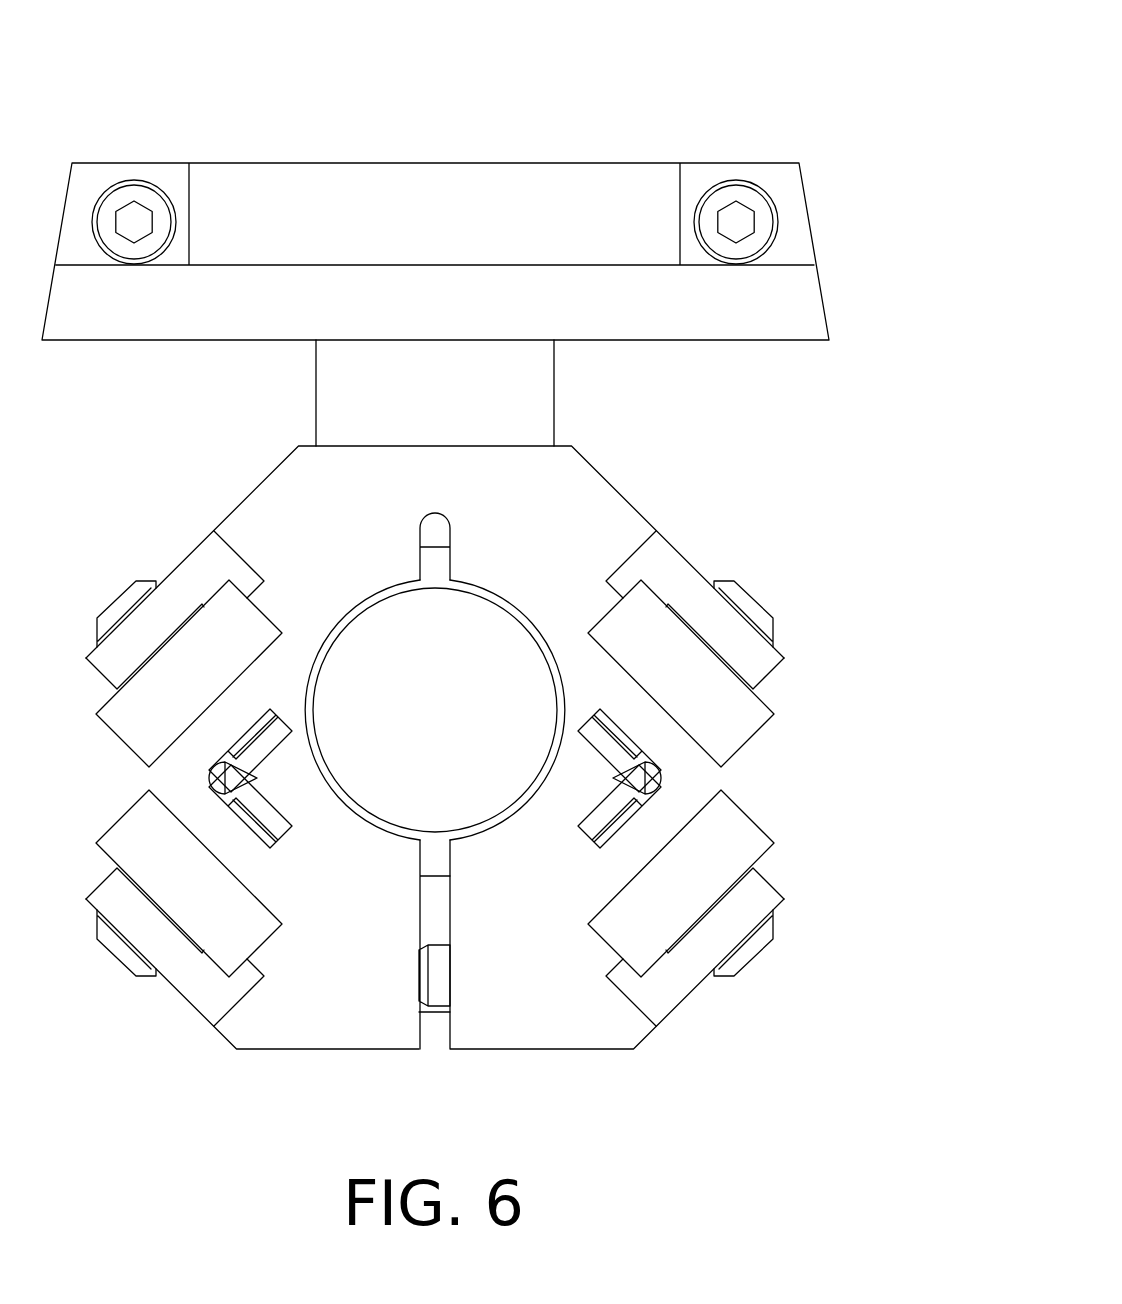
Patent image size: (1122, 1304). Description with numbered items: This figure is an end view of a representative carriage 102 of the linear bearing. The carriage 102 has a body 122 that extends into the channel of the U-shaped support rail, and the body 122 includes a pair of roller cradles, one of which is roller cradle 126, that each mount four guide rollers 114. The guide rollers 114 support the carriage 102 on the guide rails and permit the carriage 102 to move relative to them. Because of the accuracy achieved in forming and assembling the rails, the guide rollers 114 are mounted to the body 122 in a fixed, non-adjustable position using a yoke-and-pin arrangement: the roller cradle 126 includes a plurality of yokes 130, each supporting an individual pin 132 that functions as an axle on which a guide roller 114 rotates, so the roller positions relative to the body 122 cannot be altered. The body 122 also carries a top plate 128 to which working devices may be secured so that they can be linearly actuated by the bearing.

The carriage 102 is at (682, 96).
The top plate 128 is at (797, 240).
The body 122 is at (298, 1098).
The roller cradle 126 is at (553, 1035).
The yoke 130 is at (797, 875).
The guide roller 114 is at (743, 832).
The pin 132 is at (760, 957).